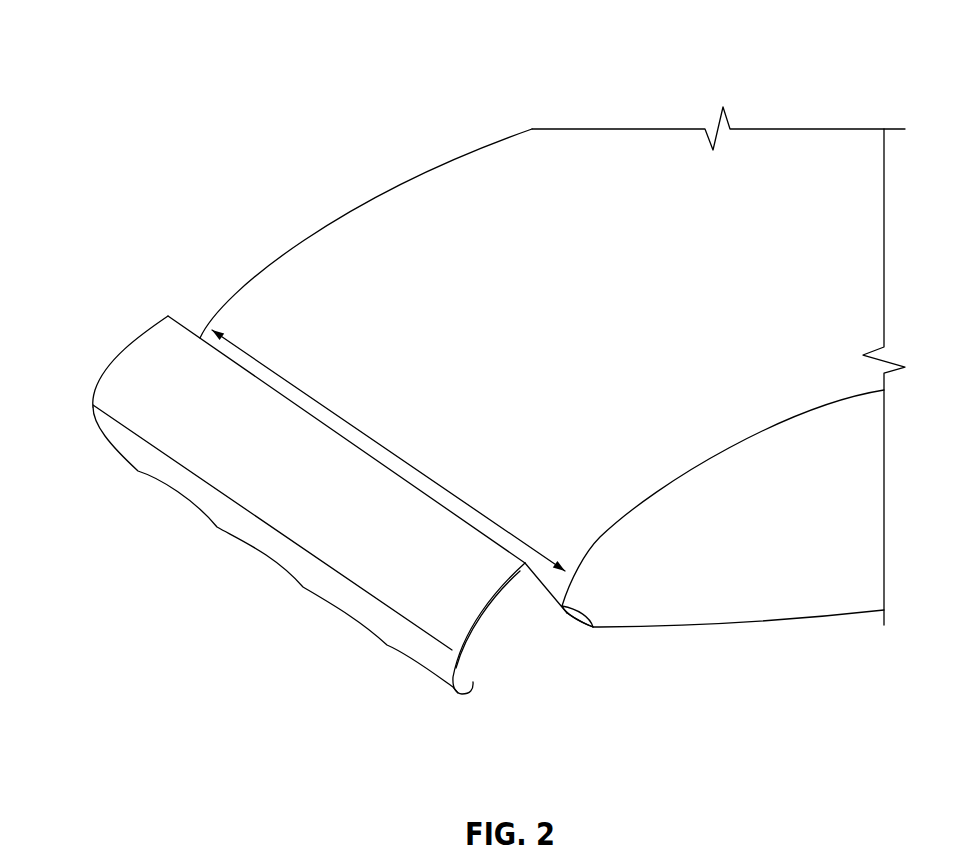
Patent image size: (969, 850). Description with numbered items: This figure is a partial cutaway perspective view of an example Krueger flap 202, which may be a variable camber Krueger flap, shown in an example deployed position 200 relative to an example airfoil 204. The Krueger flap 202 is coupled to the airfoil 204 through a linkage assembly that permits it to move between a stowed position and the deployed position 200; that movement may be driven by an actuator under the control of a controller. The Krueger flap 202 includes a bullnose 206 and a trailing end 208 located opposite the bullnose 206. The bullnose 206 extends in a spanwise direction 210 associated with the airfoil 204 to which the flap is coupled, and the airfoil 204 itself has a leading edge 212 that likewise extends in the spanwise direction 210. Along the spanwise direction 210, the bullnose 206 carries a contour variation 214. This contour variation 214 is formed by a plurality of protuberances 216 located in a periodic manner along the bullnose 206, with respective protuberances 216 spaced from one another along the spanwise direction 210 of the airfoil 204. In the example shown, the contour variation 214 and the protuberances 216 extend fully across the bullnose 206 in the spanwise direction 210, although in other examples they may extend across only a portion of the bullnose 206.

The deployed position 200 is at (806, 48).
The Krueger flap 202 is at (133, 358).
The airfoil 204 is at (367, 228).
The bullnose 206 is at (462, 697).
The trailing end 208 is at (527, 566).
The spanwise direction 210 is at (257, 356).
The leading edge 212 is at (592, 628).
The contour variation 214 is at (263, 550).
The protuberances 216 is at (137, 471).